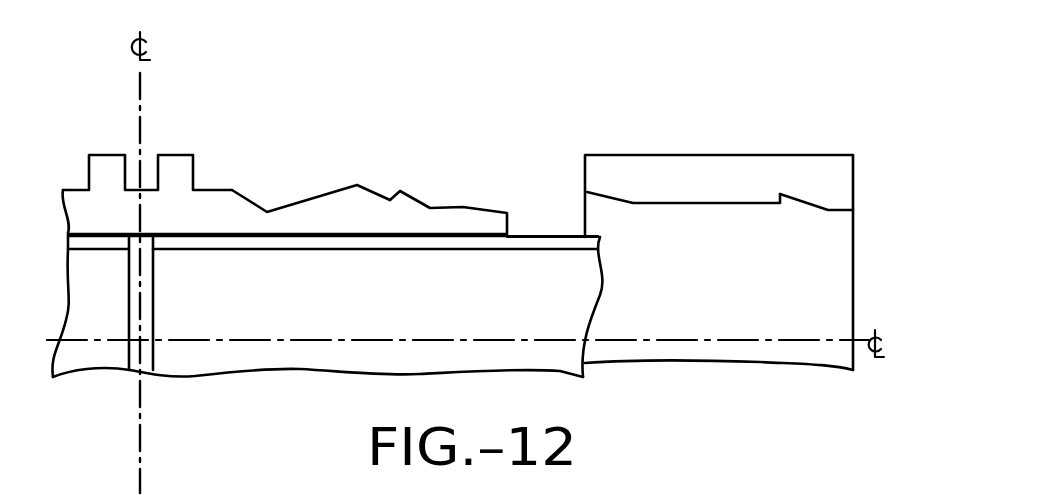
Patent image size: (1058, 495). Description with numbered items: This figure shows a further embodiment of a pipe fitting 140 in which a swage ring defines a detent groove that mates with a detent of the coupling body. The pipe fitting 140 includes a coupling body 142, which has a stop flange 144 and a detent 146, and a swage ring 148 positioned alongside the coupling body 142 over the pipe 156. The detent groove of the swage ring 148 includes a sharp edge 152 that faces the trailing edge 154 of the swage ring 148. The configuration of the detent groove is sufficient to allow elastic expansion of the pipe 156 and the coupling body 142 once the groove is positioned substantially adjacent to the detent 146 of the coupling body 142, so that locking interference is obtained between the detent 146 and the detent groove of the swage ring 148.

The pipe fitting 140 is at (540, 66).
The coupling body 142 is at (318, 193).
The stop flange 144 is at (173, 153).
The detent 146 is at (398, 193).
The swage ring 148 is at (695, 155).
The sharp edge 152 is at (782, 203).
The trailing edge 154 is at (847, 210).
The pipe 156 is at (598, 240).